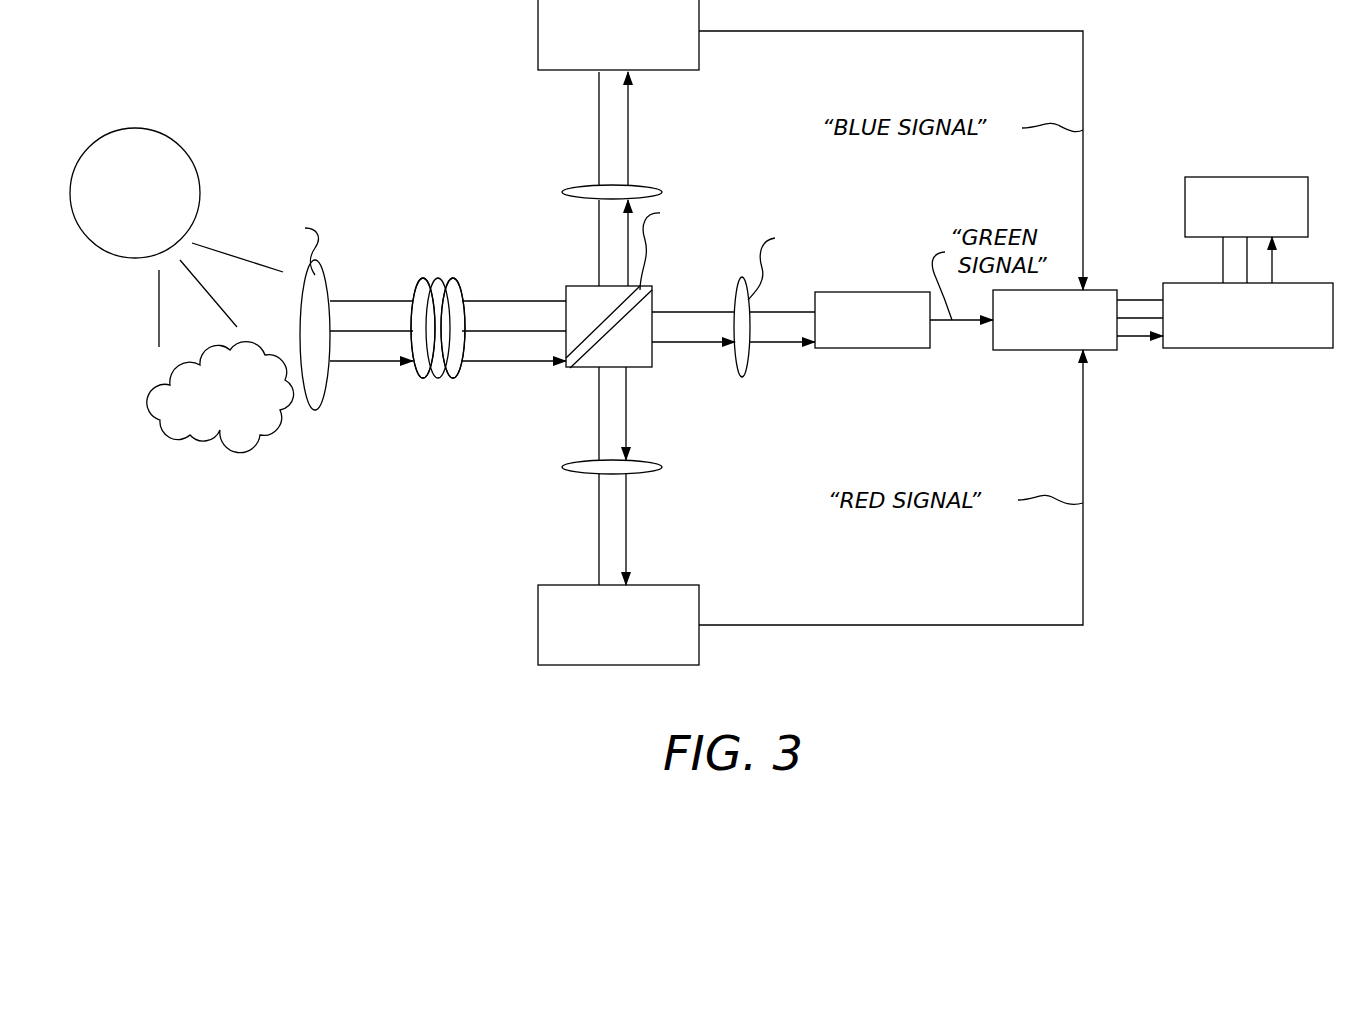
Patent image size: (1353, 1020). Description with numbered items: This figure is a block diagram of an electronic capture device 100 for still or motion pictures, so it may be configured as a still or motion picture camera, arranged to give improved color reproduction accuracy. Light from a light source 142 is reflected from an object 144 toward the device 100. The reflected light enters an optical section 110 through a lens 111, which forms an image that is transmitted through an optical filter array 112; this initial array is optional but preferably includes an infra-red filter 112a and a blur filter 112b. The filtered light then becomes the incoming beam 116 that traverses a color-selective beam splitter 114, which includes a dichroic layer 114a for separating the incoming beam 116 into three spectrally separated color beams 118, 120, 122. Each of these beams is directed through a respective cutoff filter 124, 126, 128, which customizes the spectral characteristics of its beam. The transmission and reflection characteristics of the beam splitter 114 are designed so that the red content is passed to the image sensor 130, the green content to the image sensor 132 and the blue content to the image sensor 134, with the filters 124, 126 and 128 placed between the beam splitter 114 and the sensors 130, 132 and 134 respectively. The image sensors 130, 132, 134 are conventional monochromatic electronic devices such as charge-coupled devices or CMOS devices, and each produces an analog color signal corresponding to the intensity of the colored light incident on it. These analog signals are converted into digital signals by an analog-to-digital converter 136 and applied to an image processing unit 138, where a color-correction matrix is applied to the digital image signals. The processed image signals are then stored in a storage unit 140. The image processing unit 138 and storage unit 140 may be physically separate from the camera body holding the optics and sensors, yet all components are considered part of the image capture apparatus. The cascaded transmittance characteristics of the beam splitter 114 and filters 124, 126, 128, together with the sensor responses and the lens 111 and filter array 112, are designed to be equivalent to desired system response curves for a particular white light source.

The electronic capture device 100 is at (390, 142).
The optical section 110 is at (343, 627).
The lens 111 is at (305, 328).
The optical filter array 112 is at (405, 385).
The infra-red filter 112a is at (415, 299).
The blur filter 112b is at (445, 291).
The color-selective beam splitter 114 is at (621, 292).
The dichroic layer 114a is at (566, 370).
The incoming beam 116 is at (480, 375).
The color beam 118 is at (627, 413).
The color beam 120 is at (712, 310).
The color beam 122 is at (597, 280).
The cutoff filter 124 is at (560, 466).
The cutoff filter 126 is at (742, 290).
The cutoff filter 128 is at (560, 192).
The image sensor 130 is at (538, 625).
The image sensor 132 is at (870, 348).
The image sensor 134 is at (538, 31).
The analog-to-digital converter 136 is at (1030, 350).
The image processing unit 138 is at (1245, 348).
The storage unit 140 is at (1245, 177).
The light source 142 is at (125, 259).
The object 144 is at (160, 418).